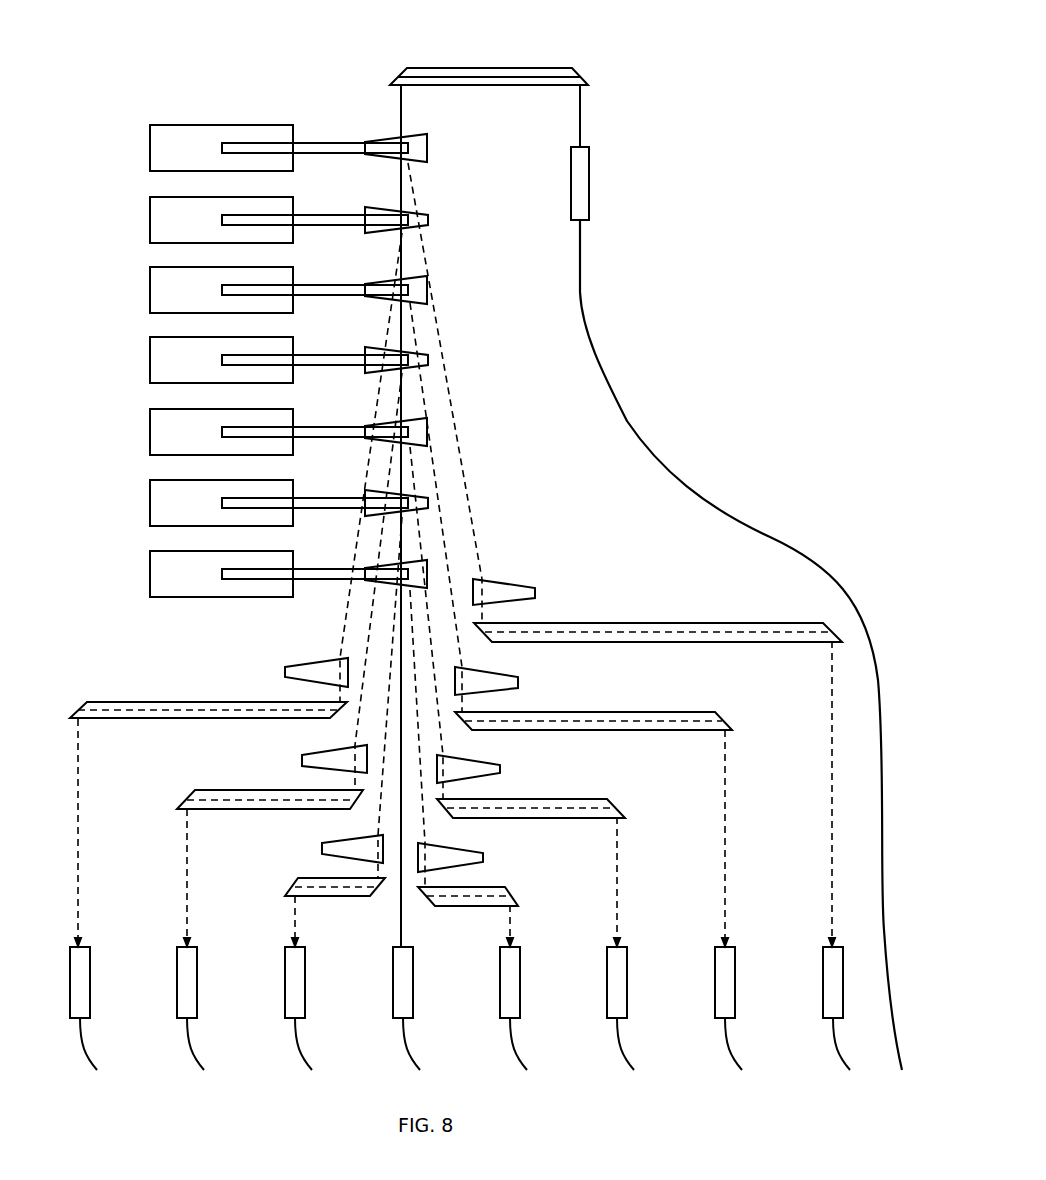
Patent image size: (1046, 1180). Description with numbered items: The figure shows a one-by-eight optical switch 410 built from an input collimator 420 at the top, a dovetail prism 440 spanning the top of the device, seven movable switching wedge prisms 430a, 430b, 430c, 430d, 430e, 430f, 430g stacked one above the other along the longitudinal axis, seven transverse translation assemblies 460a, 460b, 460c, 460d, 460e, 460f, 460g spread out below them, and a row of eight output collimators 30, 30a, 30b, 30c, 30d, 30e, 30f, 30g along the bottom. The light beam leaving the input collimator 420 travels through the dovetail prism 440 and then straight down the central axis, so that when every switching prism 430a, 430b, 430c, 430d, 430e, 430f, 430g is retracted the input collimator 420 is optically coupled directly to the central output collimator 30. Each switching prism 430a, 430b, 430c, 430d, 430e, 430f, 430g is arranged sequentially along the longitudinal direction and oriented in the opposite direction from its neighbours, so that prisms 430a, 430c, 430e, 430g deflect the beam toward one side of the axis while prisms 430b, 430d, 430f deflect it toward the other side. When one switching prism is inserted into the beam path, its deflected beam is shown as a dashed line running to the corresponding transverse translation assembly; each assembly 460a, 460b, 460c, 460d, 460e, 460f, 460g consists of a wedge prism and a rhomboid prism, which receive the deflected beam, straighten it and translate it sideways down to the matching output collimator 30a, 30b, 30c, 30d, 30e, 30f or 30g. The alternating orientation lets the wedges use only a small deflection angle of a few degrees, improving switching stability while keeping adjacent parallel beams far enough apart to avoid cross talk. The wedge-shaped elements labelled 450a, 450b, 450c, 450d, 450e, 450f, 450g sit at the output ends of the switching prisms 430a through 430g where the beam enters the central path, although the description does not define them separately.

The optical switch 410 is at (745, 300).
The input collimator 420 is at (590, 182).
The dovetail prism 440 is at (487, 68).
The switching wedge prism 430a is at (150, 574).
The switching wedge prism 430b is at (150, 503).
The switching wedge prism 430c is at (150, 432).
The switching wedge prism 430d is at (150, 360).
The switching wedge prism 430e is at (150, 290).
The switching wedge prism 430f is at (150, 220).
The switching wedge prism 430g is at (150, 148).
The input coupler 450a is at (360, 560).
The input coupler 450b is at (360, 489).
The input coupler 450c is at (360, 418).
The input coupler 450d is at (360, 346).
The input coupler 450e is at (360, 276).
The input coupler 450f is at (360, 206).
The input coupler 450g is at (360, 134).
The transverse translation assembly 460a is at (488, 880).
The transverse translation assembly 460b is at (318, 870).
The transverse translation assembly 460c is at (505, 790).
The transverse translation assembly 460d is at (298, 780).
The transverse translation assembly 460e is at (522, 702).
The transverse translation assembly 460f is at (283, 695).
The transverse translation assembly 460g is at (540, 612).
The output collimator 30 is at (393, 984).
The output collimator 30a is at (500, 984).
The output collimator 30b is at (285, 984).
The output collimator 30c is at (607, 984).
The output collimator 30d is at (177, 984).
The output collimator 30e is at (715, 984).
The output collimator 30f is at (70, 984).
The output collimator 30g is at (823, 984).